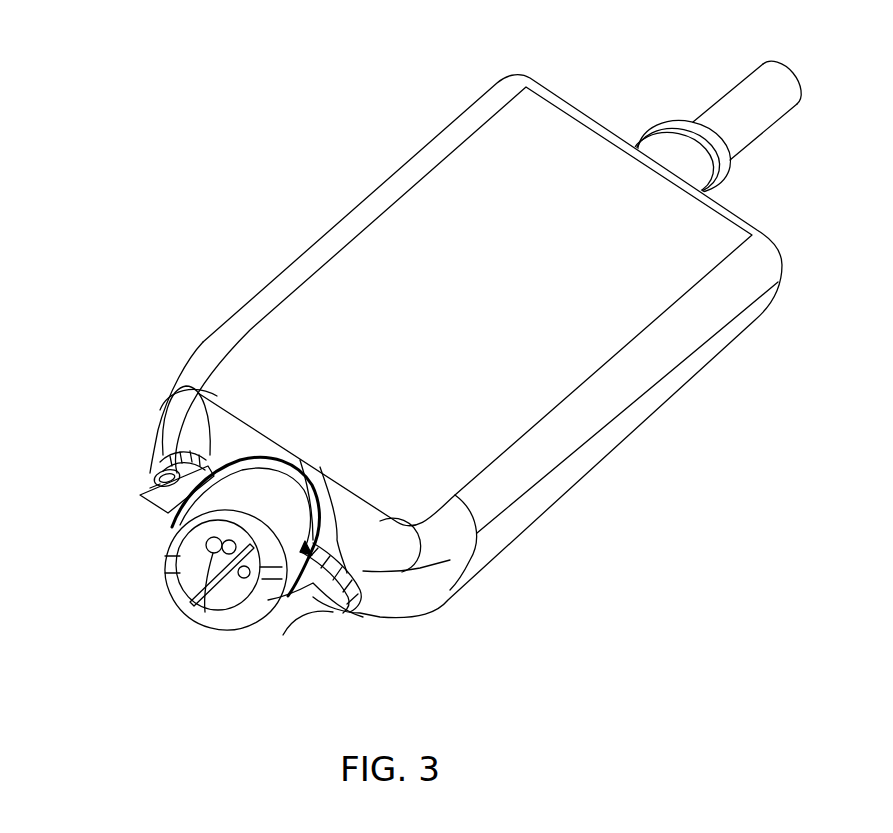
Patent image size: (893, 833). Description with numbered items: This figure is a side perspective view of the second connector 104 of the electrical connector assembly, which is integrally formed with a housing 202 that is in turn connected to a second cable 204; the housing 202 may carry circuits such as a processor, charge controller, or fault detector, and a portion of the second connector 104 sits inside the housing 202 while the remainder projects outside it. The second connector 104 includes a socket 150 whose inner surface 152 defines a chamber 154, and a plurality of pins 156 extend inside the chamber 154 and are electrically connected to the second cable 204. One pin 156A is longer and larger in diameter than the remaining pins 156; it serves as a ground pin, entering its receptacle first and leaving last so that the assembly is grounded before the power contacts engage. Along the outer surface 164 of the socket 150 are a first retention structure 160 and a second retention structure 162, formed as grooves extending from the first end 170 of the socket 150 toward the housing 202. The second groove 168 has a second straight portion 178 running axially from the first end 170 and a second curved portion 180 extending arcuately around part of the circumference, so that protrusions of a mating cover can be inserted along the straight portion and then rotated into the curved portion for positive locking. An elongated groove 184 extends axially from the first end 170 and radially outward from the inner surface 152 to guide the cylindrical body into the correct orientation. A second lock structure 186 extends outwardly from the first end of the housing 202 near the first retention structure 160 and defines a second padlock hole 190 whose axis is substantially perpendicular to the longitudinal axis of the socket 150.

The housing 202 is at (500, 110).
The second cable 204 is at (746, 88).
The second connector 104 is at (218, 478).
The second lock structure 186 is at (137, 476).
The second padlock hole 190 is at (153, 484).
The socket 150 is at (167, 511).
The outer surface 164 is at (260, 517).
The second groove 168 is at (273, 565).
The first end 170 is at (160, 547).
The first retention structure 160 is at (150, 564).
The second retention structure 162 is at (284, 595).
The inner surface 152 is at (200, 604).
The chamber 154 is at (180, 569).
The pins 156 is at (229, 554).
The ground pin 156A is at (222, 600).
The elongated groove 184 is at (205, 612).
The second straight portion 178 is at (328, 600).
The second curved portion 180 is at (375, 612).